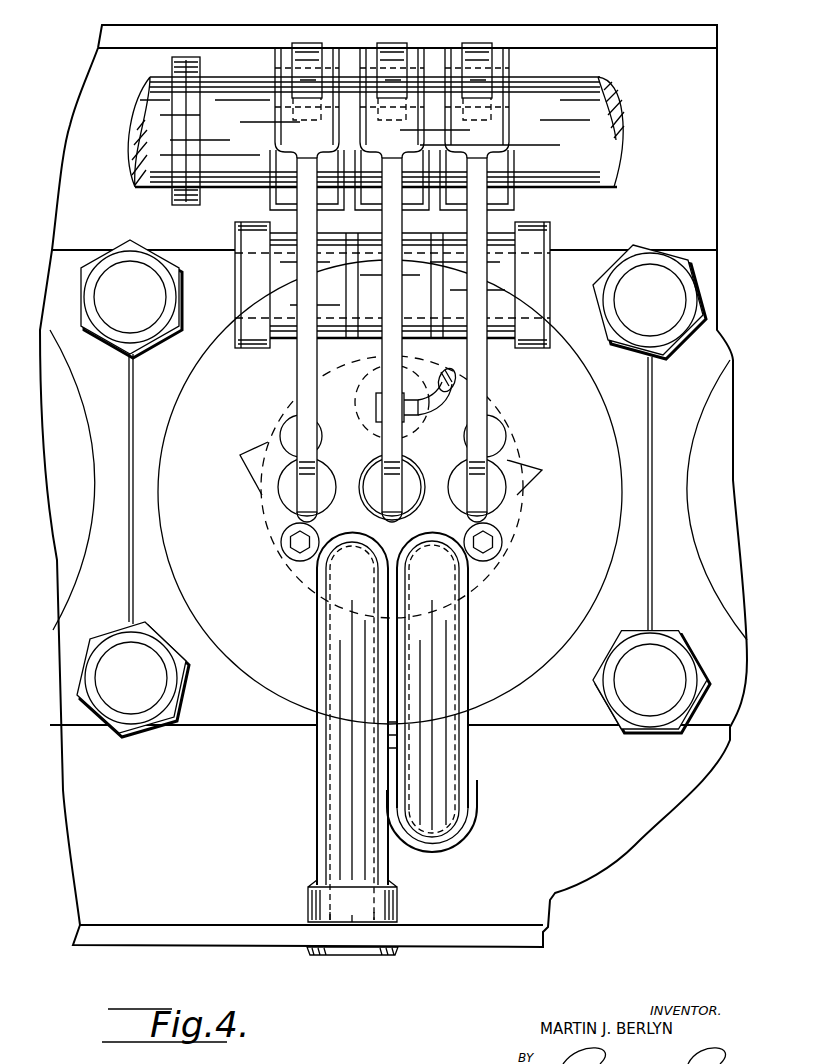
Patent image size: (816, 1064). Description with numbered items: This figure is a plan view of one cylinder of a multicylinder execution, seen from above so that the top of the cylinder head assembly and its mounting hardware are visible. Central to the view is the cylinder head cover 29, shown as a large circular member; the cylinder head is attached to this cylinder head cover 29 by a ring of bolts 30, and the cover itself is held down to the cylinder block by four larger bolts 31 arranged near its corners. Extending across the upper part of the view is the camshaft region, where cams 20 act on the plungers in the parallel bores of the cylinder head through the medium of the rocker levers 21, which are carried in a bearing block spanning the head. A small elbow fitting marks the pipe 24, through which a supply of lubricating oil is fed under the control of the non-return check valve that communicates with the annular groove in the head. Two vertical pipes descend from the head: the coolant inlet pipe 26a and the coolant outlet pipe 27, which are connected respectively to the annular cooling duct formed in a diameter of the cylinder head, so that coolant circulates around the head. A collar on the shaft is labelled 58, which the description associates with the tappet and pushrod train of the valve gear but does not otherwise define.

The cams 20 is at (293, 197).
The rocker levers 21 is at (307, 363).
The pipe 24 is at (437, 417).
The coolant inlet pipe 26a is at (462, 753).
The coolant outlet pipe 27 is at (318, 838).
The cylinder head cover 29 is at (262, 687).
The bolts 30 is at (262, 513).
The bolts 31 is at (112, 275).
The collar 58 is at (182, 183).